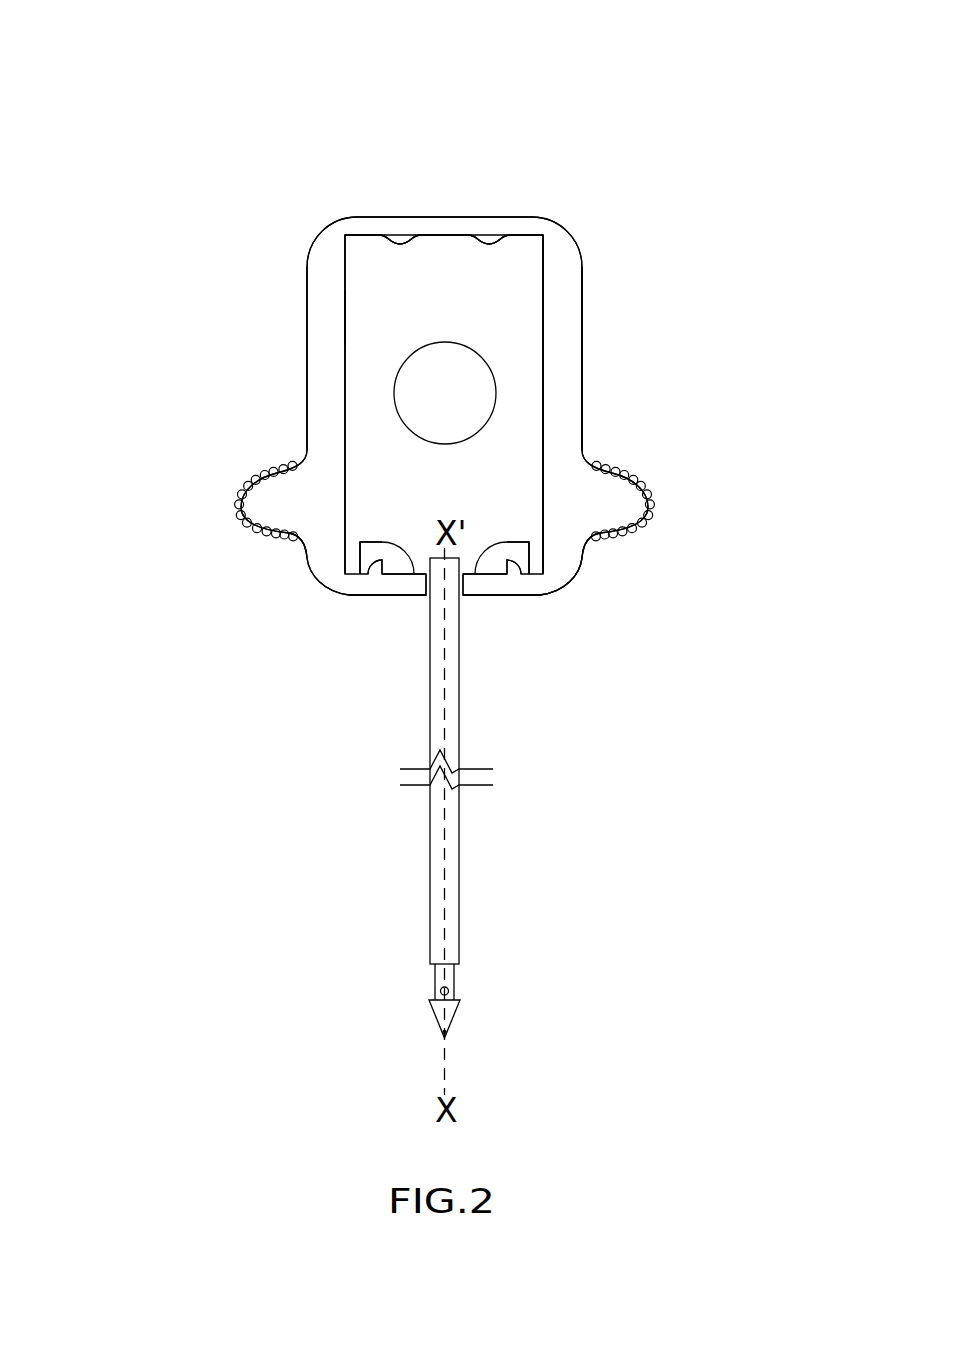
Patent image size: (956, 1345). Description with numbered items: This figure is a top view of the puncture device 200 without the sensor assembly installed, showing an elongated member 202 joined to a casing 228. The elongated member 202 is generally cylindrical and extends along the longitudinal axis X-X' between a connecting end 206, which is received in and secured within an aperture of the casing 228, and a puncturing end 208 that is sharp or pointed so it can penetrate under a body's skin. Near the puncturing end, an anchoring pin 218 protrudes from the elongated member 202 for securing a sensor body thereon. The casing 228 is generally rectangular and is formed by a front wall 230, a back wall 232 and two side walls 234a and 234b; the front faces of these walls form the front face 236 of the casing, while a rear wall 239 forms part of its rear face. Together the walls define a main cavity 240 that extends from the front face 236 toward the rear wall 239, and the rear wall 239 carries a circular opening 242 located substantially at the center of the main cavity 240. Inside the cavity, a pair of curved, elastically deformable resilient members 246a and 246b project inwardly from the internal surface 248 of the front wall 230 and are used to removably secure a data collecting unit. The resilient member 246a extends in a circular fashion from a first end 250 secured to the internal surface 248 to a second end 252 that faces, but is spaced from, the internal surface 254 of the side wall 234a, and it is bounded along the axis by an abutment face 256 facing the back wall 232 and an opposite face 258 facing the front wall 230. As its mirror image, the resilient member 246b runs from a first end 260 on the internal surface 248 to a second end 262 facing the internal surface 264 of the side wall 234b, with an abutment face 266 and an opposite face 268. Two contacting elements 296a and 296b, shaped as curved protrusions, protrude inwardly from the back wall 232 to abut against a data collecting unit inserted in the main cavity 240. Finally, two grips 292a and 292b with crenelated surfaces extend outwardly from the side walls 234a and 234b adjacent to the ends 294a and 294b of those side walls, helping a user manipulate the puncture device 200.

The puncture device 200 is at (103, 128).
The elongated member 202 is at (432, 920).
The connecting end 206 is at (470, 603).
The puncturing end 208 is at (470, 1018).
The anchoring pin 218 is at (450, 990).
The casing 228 is at (303, 238).
The front wall 230 is at (410, 594).
The back wall 232 is at (476, 232).
The side wall 234a is at (563, 365).
The side wall 234b is at (327, 352).
The front face 236 is at (568, 292).
The rear wall 239 is at (523, 288).
The main cavity 240 is at (493, 283).
The opening 242 is at (447, 386).
The resilient member 246a is at (537, 520).
The resilient member 246b is at (360, 520).
The internal surface 248 is at (537, 562).
The first end 250 is at (502, 592).
The second end 252 is at (532, 548).
The internal surface 254 is at (540, 418).
The abutment face 256 is at (500, 540).
The opposite face 258 is at (517, 574).
The first end 260 is at (395, 584).
The second end 262 is at (350, 554).
The internal surface 264 is at (352, 327).
The abutment face 266 is at (390, 537).
The opposite face 268 is at (368, 566).
The grip 292a is at (658, 492).
The grip 292b is at (222, 500).
The first end of side wall 294a is at (683, 562).
The end of side wall 294b is at (200, 578).
The contacting element 296a is at (490, 240).
The contacting element 296b is at (400, 240).